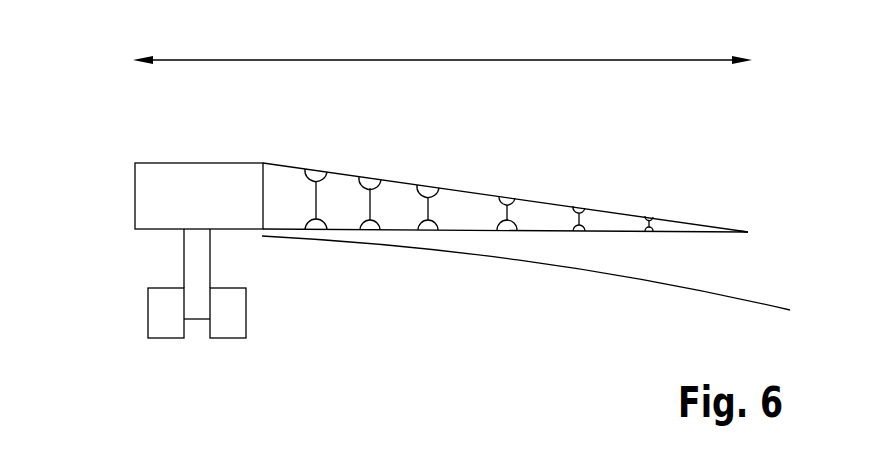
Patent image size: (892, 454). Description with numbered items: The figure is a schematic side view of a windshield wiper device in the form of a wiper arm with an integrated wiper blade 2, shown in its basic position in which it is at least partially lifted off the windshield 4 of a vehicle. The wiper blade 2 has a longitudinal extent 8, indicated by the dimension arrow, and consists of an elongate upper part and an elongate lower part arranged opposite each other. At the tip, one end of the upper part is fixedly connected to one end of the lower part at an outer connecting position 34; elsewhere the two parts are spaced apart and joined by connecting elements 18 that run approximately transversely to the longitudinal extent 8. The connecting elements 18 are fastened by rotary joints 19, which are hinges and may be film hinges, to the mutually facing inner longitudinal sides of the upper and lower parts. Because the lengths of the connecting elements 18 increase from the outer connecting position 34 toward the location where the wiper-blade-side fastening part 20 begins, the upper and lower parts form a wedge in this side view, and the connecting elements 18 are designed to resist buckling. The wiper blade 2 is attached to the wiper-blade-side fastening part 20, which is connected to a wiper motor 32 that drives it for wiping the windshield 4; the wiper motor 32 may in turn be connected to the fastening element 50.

The wiper blade 2 is at (702, 167).
The windshield 4 is at (722, 297).
The longitudinal extent 8 is at (493, 60).
The connecting element 18 is at (320, 182).
The rotary joint 19 is at (308, 172).
The wiper-blade-side fastening part 20 is at (148, 197).
The wiper motor 32 is at (160, 313).
The outer connecting position 34 is at (748, 233).
The fastening element 50 is at (192, 257).